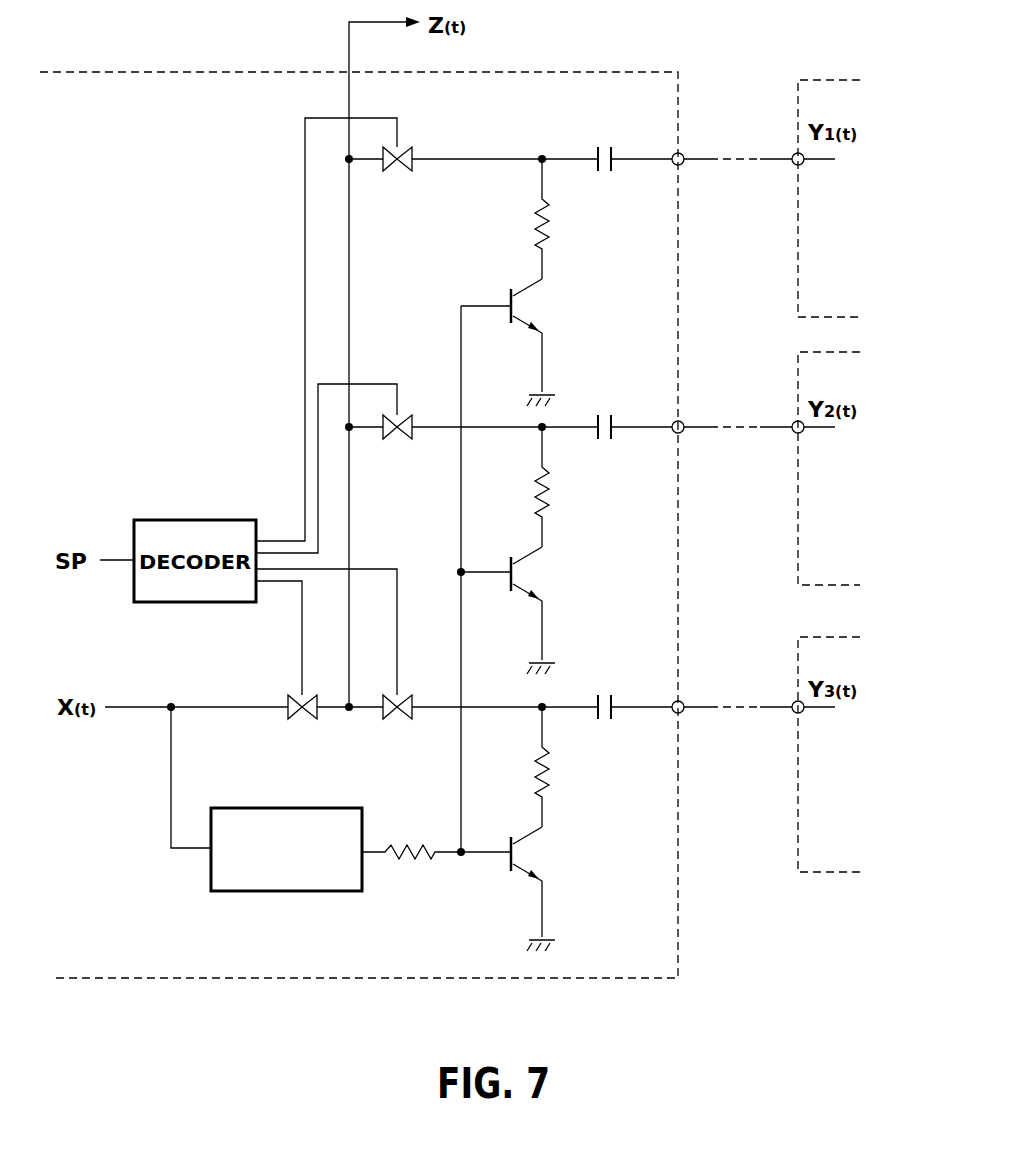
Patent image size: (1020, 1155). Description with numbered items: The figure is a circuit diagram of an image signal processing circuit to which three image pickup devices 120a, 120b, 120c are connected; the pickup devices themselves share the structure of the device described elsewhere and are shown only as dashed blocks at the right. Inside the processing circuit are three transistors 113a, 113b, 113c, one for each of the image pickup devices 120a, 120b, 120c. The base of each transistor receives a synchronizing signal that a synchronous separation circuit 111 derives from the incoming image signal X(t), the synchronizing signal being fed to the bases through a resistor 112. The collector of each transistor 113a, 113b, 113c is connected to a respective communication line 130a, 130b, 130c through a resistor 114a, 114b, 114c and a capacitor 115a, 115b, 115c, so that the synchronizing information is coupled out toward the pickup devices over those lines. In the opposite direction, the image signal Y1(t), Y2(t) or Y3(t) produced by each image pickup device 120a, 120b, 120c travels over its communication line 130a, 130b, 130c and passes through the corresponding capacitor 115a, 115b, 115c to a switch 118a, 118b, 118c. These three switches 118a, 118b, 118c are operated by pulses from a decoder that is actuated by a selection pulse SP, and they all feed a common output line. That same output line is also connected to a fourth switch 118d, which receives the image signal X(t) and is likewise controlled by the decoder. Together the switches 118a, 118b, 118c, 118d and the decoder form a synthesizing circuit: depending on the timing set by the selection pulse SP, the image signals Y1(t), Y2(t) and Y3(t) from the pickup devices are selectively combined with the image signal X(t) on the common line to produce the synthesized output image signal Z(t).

The synchronous separation circuit 111 is at (296, 893).
The resistor 112 is at (406, 870).
The transistor 113a is at (535, 312).
The transistor 113b is at (535, 580).
The transistor 113c is at (535, 860).
The resistor 114a is at (548, 226).
The resistor 114b is at (548, 494).
The resistor 114c is at (548, 774).
The capacitor 115a is at (606, 176).
The capacitor 115b is at (606, 444).
The capacitor 115c is at (606, 724).
The switch 118a is at (398, 171).
The switch 118b is at (398, 439).
The switch 118c is at (398, 719).
The switch 118d is at (303, 719).
The image pickup device 120a is at (805, 106).
The image pickup device 120b is at (805, 380).
The image pickup device 120c is at (805, 653).
The communication line 130a is at (698, 153).
The communication line 130b is at (698, 422).
The communication line 130c is at (698, 702).